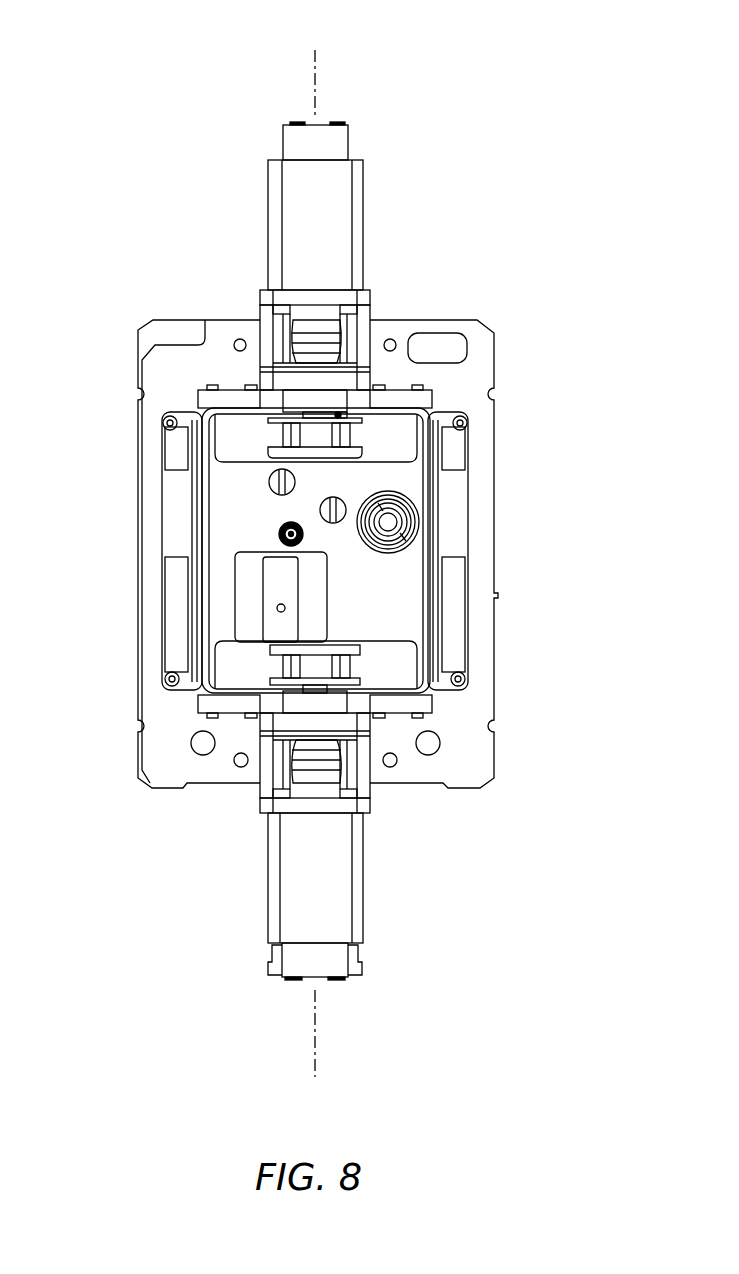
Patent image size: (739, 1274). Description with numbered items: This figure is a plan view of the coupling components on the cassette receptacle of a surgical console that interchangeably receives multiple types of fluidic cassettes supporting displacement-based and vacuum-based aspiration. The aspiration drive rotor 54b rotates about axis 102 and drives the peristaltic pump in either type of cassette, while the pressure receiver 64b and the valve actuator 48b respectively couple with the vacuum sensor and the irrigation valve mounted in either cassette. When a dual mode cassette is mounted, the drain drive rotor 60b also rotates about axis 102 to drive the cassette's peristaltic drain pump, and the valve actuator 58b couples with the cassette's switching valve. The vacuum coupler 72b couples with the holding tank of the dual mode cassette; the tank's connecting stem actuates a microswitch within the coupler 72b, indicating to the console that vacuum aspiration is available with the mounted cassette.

The axis 102 is at (320, 63).
The aspiration drive rotor 54b is at (373, 437).
The valve actuator 58b is at (345, 502).
The pressure receiver 64b is at (417, 505).
The drain drive rotor 60b is at (347, 668).
The valve actuator 48b is at (269, 482).
The vacuum coupler 72b is at (279, 533).